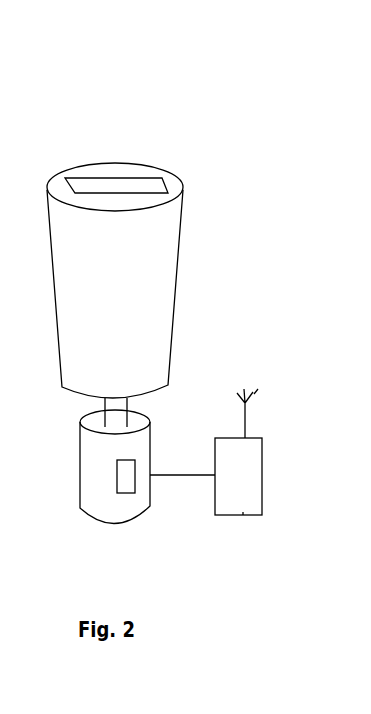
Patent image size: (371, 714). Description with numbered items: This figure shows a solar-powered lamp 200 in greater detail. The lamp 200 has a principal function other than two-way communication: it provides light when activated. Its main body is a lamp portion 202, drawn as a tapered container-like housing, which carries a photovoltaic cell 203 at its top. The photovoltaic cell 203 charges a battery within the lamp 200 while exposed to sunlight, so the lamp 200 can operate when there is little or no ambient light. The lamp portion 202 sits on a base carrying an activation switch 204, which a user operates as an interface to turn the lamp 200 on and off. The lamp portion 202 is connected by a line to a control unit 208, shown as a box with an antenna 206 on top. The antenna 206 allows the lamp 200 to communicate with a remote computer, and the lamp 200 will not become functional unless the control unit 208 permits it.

The solar-powered lamp 200 is at (161, 110).
The lamp portion 202 is at (178, 282).
The photovoltaic cell 203 is at (163, 180).
The activation switch 204 is at (122, 478).
The antenna 206 is at (247, 417).
The control unit 208 is at (243, 512).